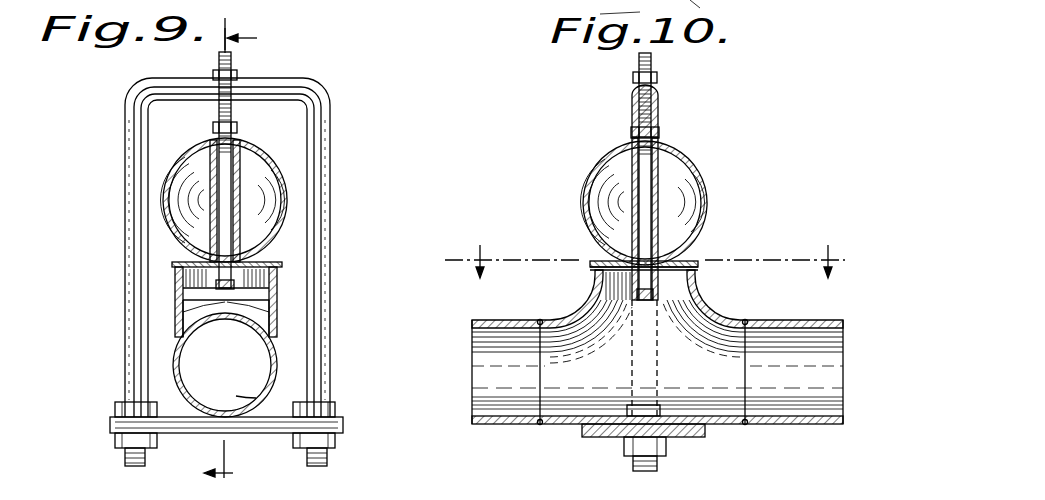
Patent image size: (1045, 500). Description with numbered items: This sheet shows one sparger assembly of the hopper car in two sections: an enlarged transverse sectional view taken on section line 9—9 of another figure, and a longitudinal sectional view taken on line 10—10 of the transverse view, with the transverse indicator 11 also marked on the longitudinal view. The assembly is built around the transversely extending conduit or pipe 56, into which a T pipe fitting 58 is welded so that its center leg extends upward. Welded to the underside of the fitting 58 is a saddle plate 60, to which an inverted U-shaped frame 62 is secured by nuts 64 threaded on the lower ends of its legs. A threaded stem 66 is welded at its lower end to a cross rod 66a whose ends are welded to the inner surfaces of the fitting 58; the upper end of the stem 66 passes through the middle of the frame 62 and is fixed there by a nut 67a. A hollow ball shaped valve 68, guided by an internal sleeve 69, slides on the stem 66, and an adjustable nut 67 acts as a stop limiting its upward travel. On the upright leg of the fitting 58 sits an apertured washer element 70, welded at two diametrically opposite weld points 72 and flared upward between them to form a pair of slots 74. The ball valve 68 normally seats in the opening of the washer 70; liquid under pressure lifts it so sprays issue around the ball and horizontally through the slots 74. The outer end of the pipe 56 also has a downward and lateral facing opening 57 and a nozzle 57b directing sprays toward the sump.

In FIG. 10, the section line 9— 9 is at (703, 7).
In FIG. 9, the section line 10— 10 is at (247, 257).
In FIG. 10, the section line 11- 11 is at (654, 261).
In FIG. 9, the conduit or pipe 56 is at (280, 372).
In FIG. 10, the conduit or pipe 56 is at (482, 320).
In FIG. 9, the downward and lateral facing opening 57 is at (258, 398).
In FIG. 9, the nozzle 57b is at (249, 25).
In FIG. 10, the nozzle 57b is at (622, 8).
In FIG. 9, the T pipe fitting 58 is at (276, 299).
In FIG. 10, the T pipe fitting 58 is at (563, 320).
In FIG. 9, the saddle plate 60 is at (268, 433).
In FIG. 10, the saddle plate 60 is at (706, 437).
In FIG. 9, the inverted U-shaped frame 62 is at (328, 204).
In FIG. 10, the inverted U-shaped frame 62 is at (658, 113).
In FIG. 9, the nuts 64 is at (330, 440).
In FIG. 10, the nuts 64 is at (626, 445).
In FIG. 9, the threaded stem 66 is at (233, 118).
In FIG. 10, the threaded stem 66 is at (641, 178).
In FIG. 9, the cross rod 66a is at (221, 292).
In FIG. 10, the cross rod 66a is at (655, 300).
In FIG. 9, the nut 67 is at (213, 130).
In FIG. 10, the nut 67 is at (660, 134).
In FIG. 9, the nut 67a is at (211, 73).
In FIG. 10, the nut 67a is at (656, 77).
In FIG. 9, the ball shaped valve 68 is at (270, 159).
In FIG. 10, the ball shaped valve 68 is at (692, 170).
In FIG. 9, the sleeve 69 is at (243, 194).
In FIG. 10, the sleeve 69 is at (658, 220).
In FIG. 9, the apertured element or washer 70 is at (241, 248).
In FIG. 10, the apertured element or washer 70 is at (687, 258).
In FIG. 9, the weld points 72 is at (175, 271).
In FIG. 9, the slots 74 is at (246, 320).
In FIG. 10, the slots 74 is at (698, 268).